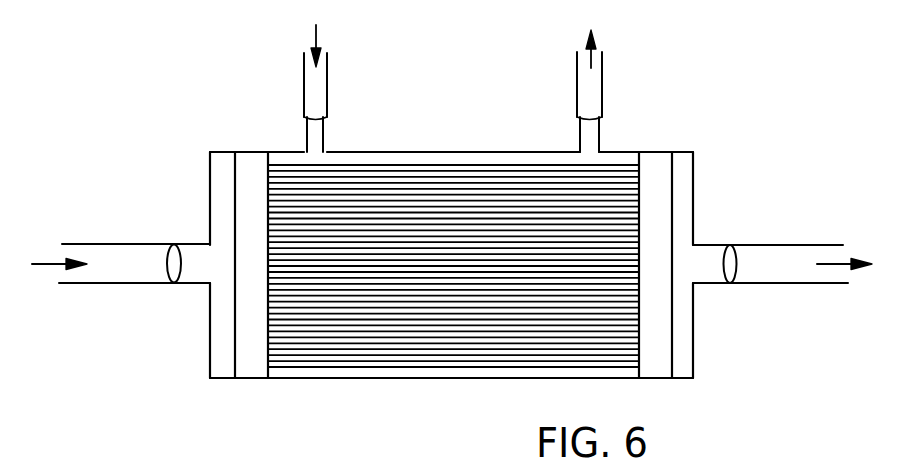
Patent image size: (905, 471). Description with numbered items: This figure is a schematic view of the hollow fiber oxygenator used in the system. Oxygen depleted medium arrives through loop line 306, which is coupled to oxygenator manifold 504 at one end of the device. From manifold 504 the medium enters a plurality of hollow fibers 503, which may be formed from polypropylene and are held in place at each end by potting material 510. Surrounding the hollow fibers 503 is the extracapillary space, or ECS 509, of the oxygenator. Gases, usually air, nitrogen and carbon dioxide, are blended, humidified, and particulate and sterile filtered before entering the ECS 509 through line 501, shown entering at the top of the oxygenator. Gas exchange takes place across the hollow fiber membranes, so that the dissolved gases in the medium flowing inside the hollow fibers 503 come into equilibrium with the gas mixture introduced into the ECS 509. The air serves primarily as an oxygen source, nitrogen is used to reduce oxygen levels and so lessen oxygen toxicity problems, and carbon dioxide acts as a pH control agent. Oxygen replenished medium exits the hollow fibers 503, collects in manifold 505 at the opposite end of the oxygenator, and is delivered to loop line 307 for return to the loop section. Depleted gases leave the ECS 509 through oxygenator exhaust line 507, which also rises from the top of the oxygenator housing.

The loop line 306 is at (130, 262).
The loop line 307 is at (766, 262).
The line 501 is at (304, 97).
The hollow fibers 503 is at (460, 378).
The manifold 504 is at (218, 357).
The manifold 505 is at (688, 352).
The oxygenator exhaust line 507 is at (603, 92).
The ECS 509 is at (446, 160).
The potting material 510 is at (251, 157).